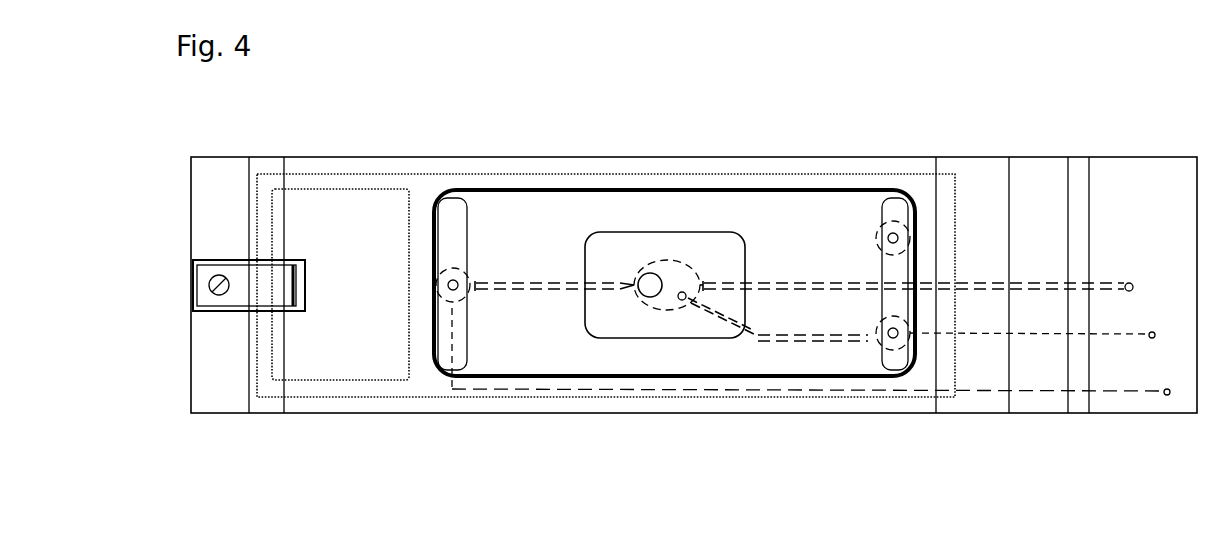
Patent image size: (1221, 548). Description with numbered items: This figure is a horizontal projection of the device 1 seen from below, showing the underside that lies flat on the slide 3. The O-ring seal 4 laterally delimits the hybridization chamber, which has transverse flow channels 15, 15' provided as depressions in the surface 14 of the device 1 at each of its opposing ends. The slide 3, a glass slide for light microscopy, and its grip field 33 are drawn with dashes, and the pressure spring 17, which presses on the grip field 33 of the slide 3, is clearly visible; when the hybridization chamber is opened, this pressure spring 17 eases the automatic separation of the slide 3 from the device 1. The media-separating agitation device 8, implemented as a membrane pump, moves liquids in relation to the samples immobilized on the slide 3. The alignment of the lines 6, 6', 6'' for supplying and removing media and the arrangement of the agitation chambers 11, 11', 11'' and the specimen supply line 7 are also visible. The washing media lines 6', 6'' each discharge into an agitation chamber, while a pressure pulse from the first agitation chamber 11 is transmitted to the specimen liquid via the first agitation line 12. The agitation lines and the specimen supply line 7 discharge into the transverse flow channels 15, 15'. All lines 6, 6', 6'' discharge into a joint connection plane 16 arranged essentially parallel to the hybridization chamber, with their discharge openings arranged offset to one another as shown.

The device 1 is at (694, 285).
The slide 3 is at (945, 188).
The seal 4 is at (803, 188).
The line 6 is at (1036, 242).
The supply and/or removal line 6' is at (811, 351).
The supply and/or removal line 6'' is at (1032, 359).
The specimen supply line 7 is at (896, 228).
The agitation device 8 is at (665, 285).
The first agitation chamber 11 is at (675, 255).
The second agitation chamber 11' is at (858, 329).
The third agitation chamber 11'' is at (505, 311).
The first agitation line 12 is at (757, 330).
The surface 14 is at (804, 272).
The transverse flow channel 15 is at (838, 284).
The transverse flow channel 15' is at (502, 284).
The joint connection plane 16 is at (1092, 285).
The pressure spring 17 is at (249, 285).
The grip field 33 is at (362, 189).